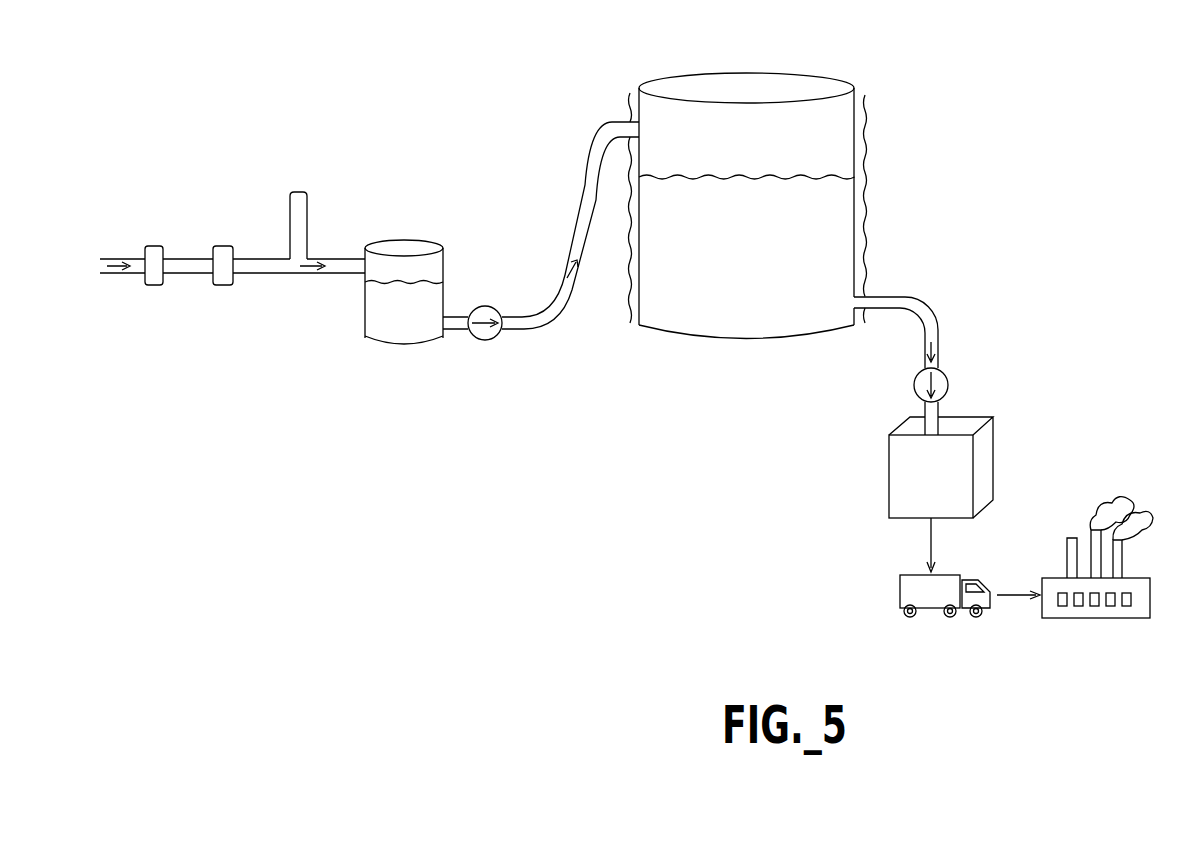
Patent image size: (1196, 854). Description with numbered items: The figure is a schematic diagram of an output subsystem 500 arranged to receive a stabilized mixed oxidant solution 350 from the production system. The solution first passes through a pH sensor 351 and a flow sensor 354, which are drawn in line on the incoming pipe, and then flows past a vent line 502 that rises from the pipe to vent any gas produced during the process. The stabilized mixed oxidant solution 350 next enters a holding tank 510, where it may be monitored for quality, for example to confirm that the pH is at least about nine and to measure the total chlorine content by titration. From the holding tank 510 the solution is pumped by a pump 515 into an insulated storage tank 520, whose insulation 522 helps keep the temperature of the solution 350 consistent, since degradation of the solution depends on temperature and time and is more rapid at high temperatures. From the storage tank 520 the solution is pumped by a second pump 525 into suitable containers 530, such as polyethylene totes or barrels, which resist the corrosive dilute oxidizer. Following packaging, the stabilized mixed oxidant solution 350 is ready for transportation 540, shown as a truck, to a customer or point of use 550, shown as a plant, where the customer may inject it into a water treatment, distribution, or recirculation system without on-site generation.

The output subsystem 500 is at (180, 73).
The pH sensor 351 is at (153, 287).
The flow sensor 354 is at (221, 287).
The vent line 502 is at (308, 219).
The holding tank 510 is at (443, 265).
The pump 515 is at (488, 341).
The insulated storage tank 520 is at (855, 135).
The insulation 522 is at (862, 205).
The stabilized mixed oxidant solution 350 is at (395, 295).
The pump 525 is at (946, 380).
The containers 530 is at (993, 458).
The transportation 540 is at (935, 612).
The customer/point of use 550 is at (1090, 622).